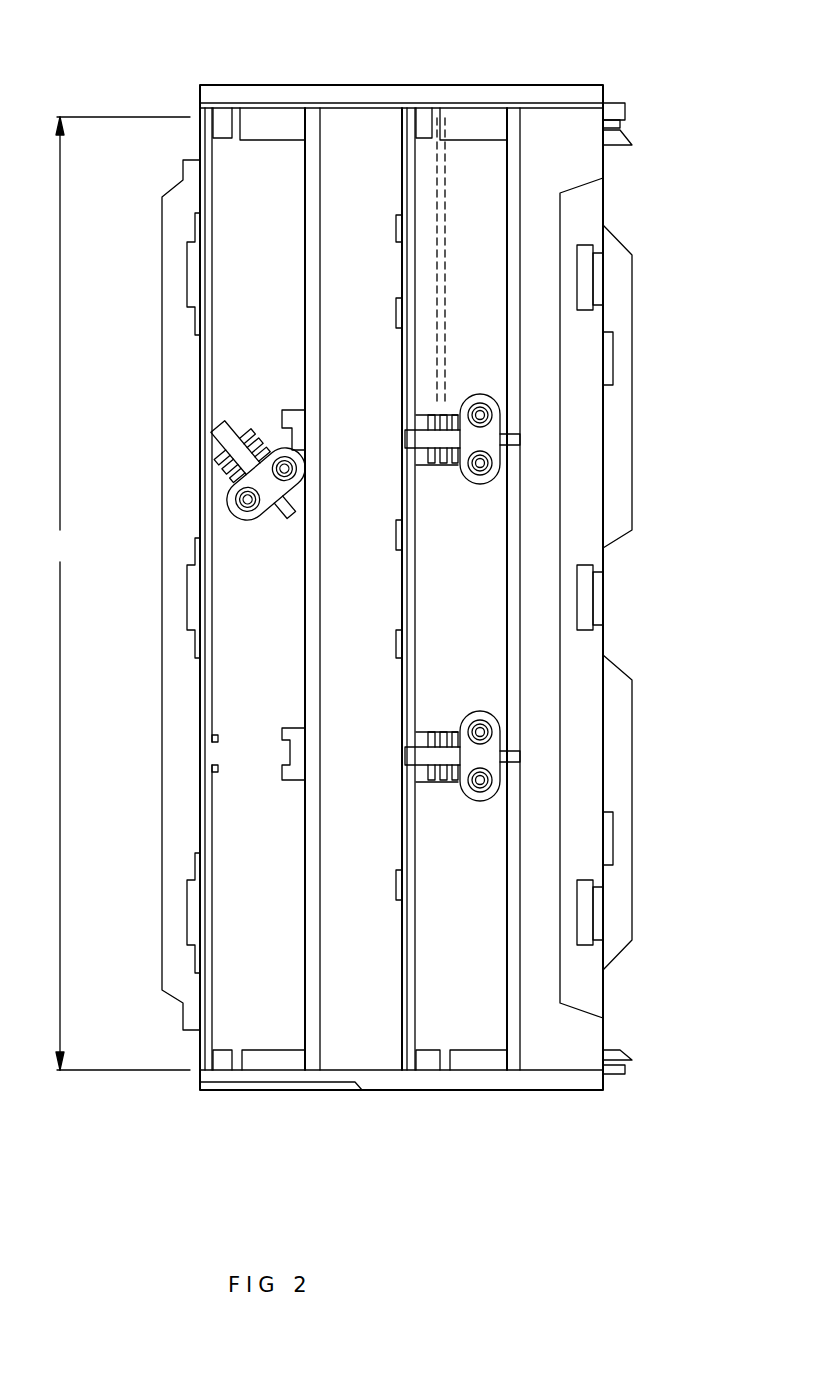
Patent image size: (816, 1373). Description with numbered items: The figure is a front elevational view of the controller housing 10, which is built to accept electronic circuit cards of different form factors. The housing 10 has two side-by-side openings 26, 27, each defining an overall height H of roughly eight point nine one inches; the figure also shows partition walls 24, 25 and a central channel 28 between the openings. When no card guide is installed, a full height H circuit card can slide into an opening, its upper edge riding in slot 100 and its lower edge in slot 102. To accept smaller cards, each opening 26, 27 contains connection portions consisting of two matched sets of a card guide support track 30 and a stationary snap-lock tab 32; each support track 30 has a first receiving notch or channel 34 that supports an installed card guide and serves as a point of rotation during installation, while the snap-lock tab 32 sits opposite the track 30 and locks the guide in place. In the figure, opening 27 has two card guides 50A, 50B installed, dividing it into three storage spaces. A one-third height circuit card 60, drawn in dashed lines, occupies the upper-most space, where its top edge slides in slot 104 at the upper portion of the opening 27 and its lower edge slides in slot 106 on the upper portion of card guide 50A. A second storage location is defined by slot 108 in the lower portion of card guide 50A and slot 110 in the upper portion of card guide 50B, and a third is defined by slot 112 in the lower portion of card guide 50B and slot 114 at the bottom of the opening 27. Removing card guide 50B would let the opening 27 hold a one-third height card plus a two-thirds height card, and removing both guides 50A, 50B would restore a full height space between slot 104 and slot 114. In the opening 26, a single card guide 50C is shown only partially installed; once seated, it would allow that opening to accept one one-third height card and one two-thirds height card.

The controller housing 10 is at (353, 72).
The first partition wall 24 is at (313, 133).
The second partition wall 25 is at (523, 140).
The opening 26 is at (262, 933).
The opening 27 is at (560, 1003).
The central channel 28 is at (372, 130).
The card guide support track 30 is at (188, 757).
The stationary snap-lock tab 32 is at (298, 417).
The first receiving notch or channel 34 is at (213, 752).
The card guide 50A is at (475, 440).
The card guide 50B is at (480, 745).
The card guide 50C is at (262, 420).
The one-third height circuit card 60 is at (443, 268).
The slot 100 is at (240, 125).
The slot 102 is at (238, 1062).
The slot 104 is at (440, 125).
The slot 106 is at (437, 412).
The slot 108 is at (437, 470).
The slot 110 is at (440, 735).
The slot 112 is at (437, 778).
The slot 114 is at (443, 1058).
The overall height H is at (121, 593).